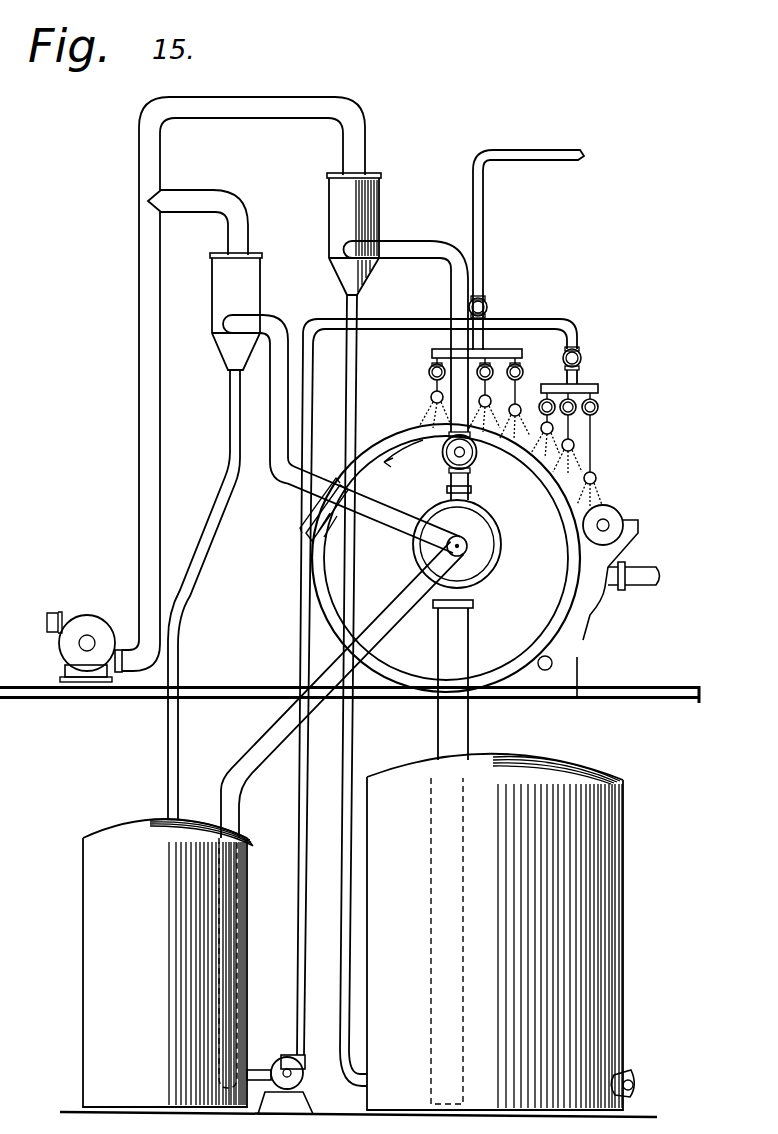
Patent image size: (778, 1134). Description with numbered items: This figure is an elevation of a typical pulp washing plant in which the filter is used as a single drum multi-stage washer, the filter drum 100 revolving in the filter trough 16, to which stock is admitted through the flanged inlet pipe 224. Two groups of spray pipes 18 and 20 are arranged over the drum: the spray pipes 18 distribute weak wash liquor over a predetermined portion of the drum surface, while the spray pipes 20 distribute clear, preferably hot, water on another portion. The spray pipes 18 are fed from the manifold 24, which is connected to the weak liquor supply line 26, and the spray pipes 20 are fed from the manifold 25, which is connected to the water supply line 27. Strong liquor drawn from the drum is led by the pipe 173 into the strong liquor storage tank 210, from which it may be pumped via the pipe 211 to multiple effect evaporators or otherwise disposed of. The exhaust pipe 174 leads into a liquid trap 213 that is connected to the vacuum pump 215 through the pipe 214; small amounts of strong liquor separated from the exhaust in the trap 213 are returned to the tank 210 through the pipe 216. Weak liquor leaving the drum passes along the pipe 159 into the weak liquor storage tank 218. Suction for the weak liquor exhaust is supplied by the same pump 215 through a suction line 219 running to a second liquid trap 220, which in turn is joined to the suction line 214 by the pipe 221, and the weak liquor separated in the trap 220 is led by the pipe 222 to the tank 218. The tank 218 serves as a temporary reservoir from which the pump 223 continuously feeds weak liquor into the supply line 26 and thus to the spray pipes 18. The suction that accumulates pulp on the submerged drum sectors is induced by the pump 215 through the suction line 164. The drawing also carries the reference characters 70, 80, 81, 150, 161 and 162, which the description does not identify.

The filter trough 16 is at (559, 663).
The spray pipes 18 is at (597, 470).
The spray pipes 20 is at (431, 398).
The manifold 24 is at (592, 383).
The manifold 25 is at (506, 348).
The weak liquor supply line 26 is at (577, 330).
The water supply line 27 is at (484, 233).
The roller 70 is at (618, 512).
The scraper 80 is at (343, 527).
The scraper support 81 is at (302, 533).
The filter drum 100 is at (557, 559).
The hub 150 is at (489, 514).
The pipe 159 is at (392, 614).
The coupling 161 is at (470, 601).
The coupling 162 is at (469, 490).
The suction line 164 is at (466, 481).
The pipe 173 is at (462, 740).
The exhaust pipe 174 is at (404, 246).
The strong liquor storage tank 210 is at (547, 895).
The pipe 211 is at (633, 1069).
The liquid trap 213 is at (378, 186).
The pipe 214 is at (138, 334).
The vacuum pump 215 is at (86, 618).
The pipe 216 is at (350, 749).
The weak liquor storage tank 218 is at (177, 897).
The suction line 219 is at (293, 478).
The liquid trap 220 is at (248, 303).
The pipe 221 is at (226, 182).
The pipe 222 is at (173, 663).
The pump 223 is at (271, 1055).
The flanged inlet pipe 224 is at (610, 590).